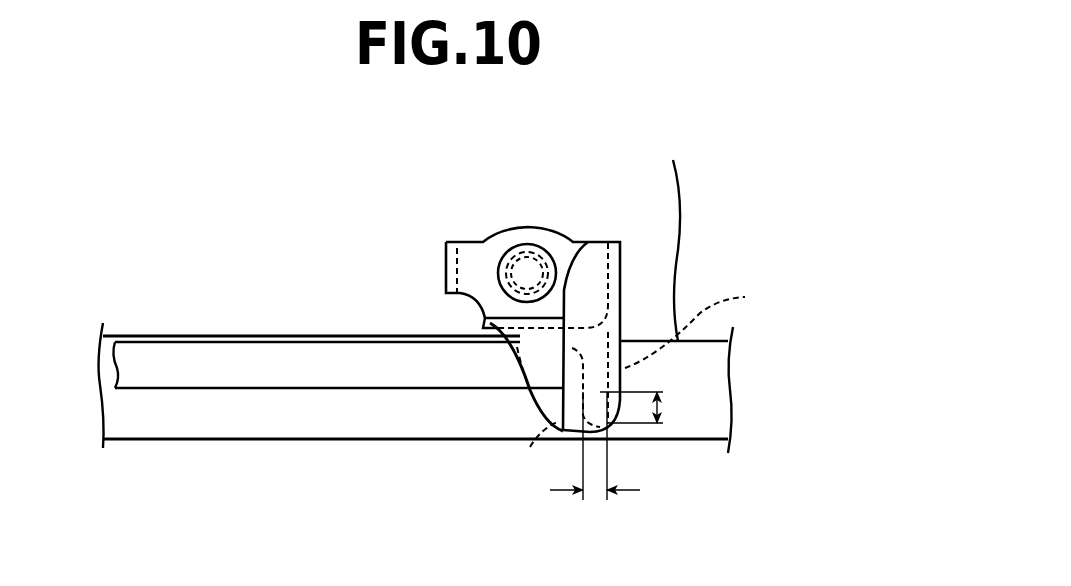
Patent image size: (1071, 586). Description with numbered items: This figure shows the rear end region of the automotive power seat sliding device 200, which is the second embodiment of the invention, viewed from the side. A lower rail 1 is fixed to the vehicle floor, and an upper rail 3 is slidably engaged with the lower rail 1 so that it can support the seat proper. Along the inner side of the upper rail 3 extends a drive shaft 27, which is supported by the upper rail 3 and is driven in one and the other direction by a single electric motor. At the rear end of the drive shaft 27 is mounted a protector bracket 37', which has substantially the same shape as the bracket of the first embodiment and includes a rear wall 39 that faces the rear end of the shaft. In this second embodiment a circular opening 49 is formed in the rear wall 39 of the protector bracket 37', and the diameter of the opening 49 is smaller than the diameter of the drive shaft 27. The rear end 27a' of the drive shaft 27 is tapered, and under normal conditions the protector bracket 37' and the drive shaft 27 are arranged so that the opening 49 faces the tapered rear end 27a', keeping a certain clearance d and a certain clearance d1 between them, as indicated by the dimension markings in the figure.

The automotive power seat sliding device 200 is at (796, 99).
The lower rail 1 is at (278, 412).
The drive shaft 27 is at (238, 353).
The upper rail 3 is at (657, 236).
The rear wall 39 is at (617, 410).
The rear end 27a' is at (510, 438).
The circular opening 49 is at (711, 324).
The protector bracket 37' is at (435, 483).
The clearance d is at (595, 460).
The clearance d1 is at (650, 408).